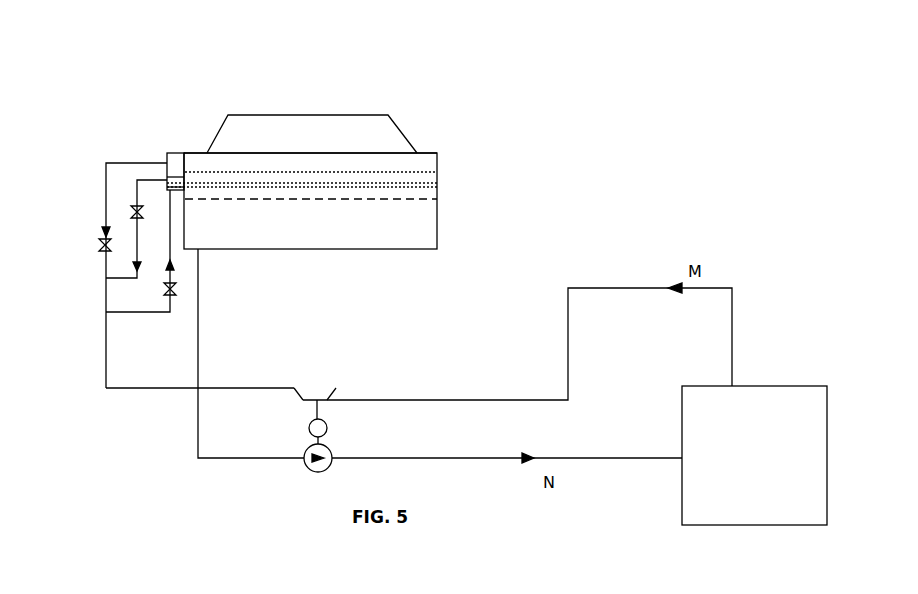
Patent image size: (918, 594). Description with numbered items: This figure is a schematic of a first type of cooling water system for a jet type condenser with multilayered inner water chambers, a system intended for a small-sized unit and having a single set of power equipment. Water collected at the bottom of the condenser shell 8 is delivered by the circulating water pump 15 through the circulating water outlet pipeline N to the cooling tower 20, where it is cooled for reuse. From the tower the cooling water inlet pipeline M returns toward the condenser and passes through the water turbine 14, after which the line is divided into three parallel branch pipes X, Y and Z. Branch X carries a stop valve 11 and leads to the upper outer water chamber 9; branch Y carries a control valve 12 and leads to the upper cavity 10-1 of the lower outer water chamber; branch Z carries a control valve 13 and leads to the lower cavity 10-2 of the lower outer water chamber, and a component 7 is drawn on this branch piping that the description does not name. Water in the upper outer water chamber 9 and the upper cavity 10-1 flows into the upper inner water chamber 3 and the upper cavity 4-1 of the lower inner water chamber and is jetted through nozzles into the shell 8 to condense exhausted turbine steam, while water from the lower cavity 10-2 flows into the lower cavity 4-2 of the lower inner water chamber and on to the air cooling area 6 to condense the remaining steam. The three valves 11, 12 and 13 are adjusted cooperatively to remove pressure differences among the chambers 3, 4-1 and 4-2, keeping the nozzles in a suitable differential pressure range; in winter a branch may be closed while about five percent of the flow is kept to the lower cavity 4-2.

The upper inner water chamber 3 is at (232, 167).
The upper cavity of the lower inner water chamber 4-1 is at (283, 172).
The lower cavity of the lower inner water chamber 4-2 is at (350, 185).
The air cooling area 6 is at (397, 195).
The piping loop 7 is at (132, 275).
The condenser shell 8 is at (380, 233).
The upper outer water chamber 9 is at (163, 157).
The upper cavity of the lower outer water chamber 10-1 is at (173, 177).
The lower cavity of the lower outer water chamber 10-2 is at (175, 187).
The stop valve 11 is at (132, 212).
The control valve 12 is at (103, 250).
The control valve 13 is at (172, 287).
The water turbine 14 is at (325, 393).
The circulating water pump 15 is at (328, 447).
The cooling tower 20 is at (770, 527).